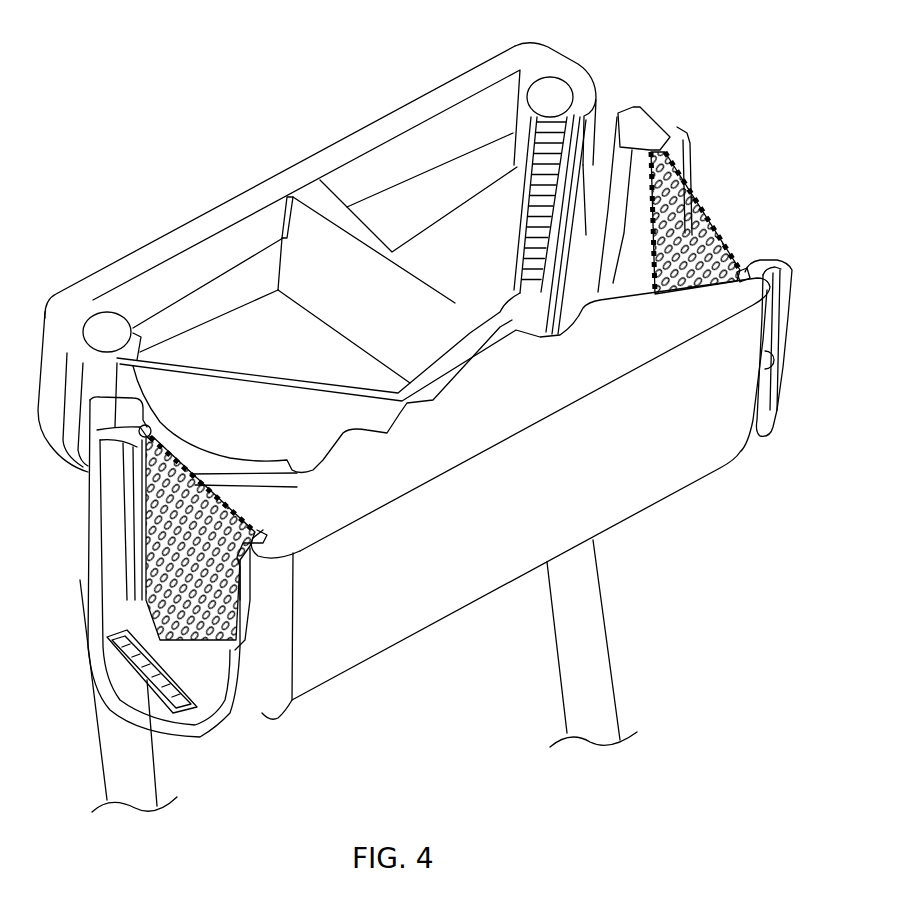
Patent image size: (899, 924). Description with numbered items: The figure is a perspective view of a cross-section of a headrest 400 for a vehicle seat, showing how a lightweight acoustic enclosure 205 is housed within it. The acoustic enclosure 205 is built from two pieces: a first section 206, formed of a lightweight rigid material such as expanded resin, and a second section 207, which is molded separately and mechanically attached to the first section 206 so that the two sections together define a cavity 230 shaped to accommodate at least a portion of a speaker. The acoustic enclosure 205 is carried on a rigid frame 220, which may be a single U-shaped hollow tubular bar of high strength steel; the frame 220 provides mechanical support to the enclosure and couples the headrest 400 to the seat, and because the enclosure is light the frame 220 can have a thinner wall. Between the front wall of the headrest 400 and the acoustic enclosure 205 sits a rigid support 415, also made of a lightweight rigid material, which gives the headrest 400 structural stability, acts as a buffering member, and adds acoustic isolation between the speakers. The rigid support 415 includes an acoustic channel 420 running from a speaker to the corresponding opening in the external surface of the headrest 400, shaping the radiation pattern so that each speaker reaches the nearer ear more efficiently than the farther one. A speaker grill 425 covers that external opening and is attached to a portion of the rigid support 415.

The headrest 400 is at (168, 60).
The acoustic enclosure 205 is at (293, 164).
The second section 207 is at (495, 67).
The first section 206 is at (444, 335).
The cavity 230 is at (260, 345).
The rigid support 415 is at (730, 351).
The acoustic channel 420 is at (650, 110).
The speaker grill 425 is at (123, 507).
The frame 220 is at (108, 718).